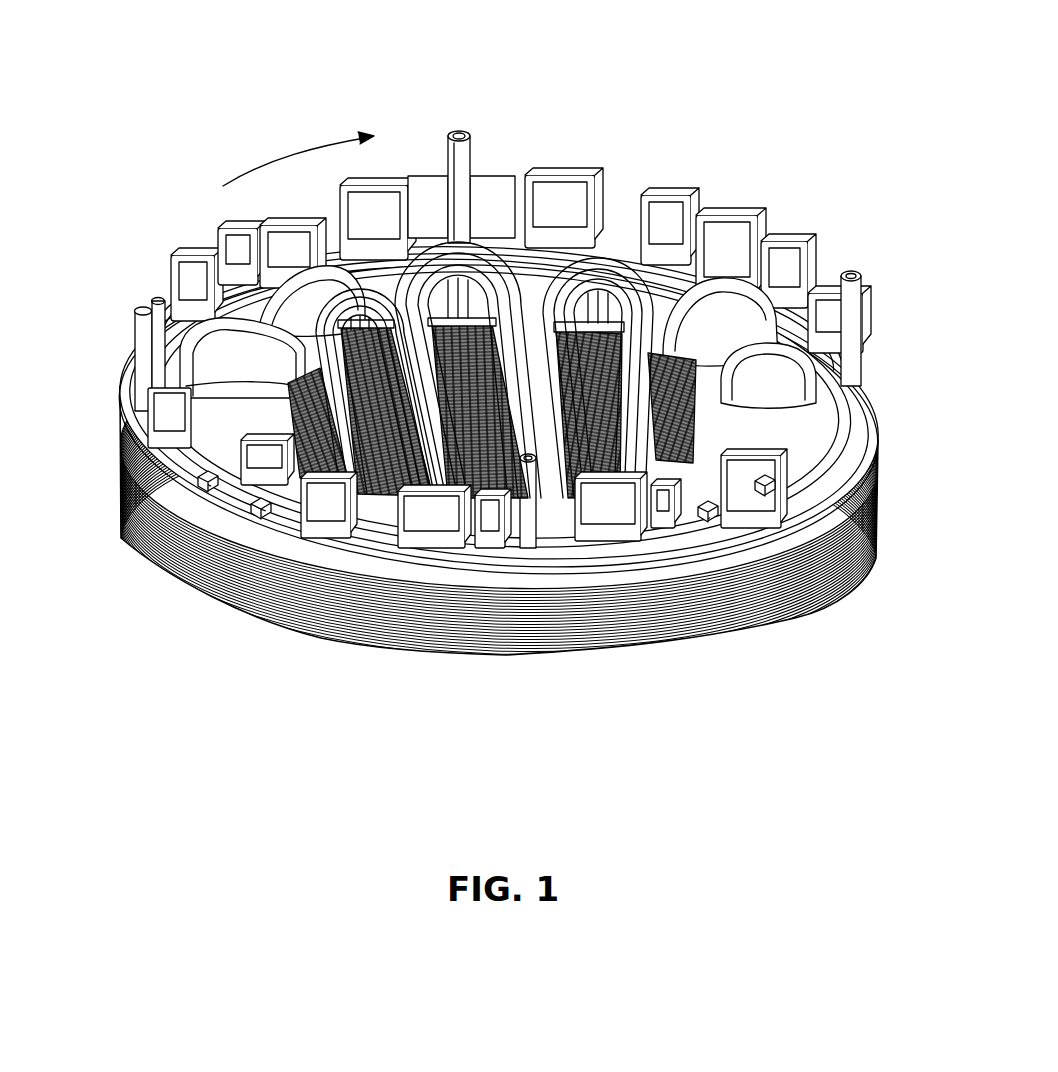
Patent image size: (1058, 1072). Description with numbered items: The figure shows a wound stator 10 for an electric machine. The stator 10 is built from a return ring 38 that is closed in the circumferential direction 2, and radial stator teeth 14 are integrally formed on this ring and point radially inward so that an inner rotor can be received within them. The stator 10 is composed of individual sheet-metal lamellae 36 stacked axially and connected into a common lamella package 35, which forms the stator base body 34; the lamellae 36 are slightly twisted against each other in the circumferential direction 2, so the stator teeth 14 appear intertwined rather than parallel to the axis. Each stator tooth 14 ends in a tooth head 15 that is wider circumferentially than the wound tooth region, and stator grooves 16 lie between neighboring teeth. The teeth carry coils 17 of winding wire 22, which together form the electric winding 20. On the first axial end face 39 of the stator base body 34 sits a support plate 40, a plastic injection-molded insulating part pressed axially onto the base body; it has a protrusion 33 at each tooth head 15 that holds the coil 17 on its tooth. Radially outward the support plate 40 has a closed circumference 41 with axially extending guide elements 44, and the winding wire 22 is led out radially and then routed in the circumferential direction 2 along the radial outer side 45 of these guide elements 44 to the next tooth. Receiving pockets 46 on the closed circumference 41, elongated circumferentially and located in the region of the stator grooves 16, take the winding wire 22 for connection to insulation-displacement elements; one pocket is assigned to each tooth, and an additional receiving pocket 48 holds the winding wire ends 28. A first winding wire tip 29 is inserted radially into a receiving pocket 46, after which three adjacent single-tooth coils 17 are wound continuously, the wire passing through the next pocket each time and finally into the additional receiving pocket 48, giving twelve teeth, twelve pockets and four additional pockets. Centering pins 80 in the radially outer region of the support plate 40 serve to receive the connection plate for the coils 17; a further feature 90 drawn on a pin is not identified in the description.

The circumferential direction 2 is at (262, 168).
The stator 10 is at (502, 385).
The stator teeth 14 is at (492, 294).
The tooth head 15 is at (492, 294).
The stator grooves 16 is at (523, 283).
The coils 17 is at (762, 284).
The electric winding 20 is at (790, 356).
The winding wire 22 is at (502, 559).
The winding wire ends 28 is at (502, 559).
The first winding wire tip 29 is at (502, 559).
The protrusion 33 is at (374, 300).
The stator base body 34 is at (518, 483).
The lamella package 35 is at (518, 483).
The sheet-metal lamellae 36 is at (518, 483).
The return ring 38 is at (518, 483).
The first axial end face 39 is at (518, 483).
The support plate 40 is at (518, 483).
The closed circumference 41 is at (518, 483).
The guide elements 44 is at (518, 483).
The radial outer side 45 is at (866, 440).
The receiving pockets 46 is at (502, 559).
The additional receiving pocket 48 is at (182, 480).
The centering pins 80 is at (498, 293).
The connection end 90 is at (451, 122).